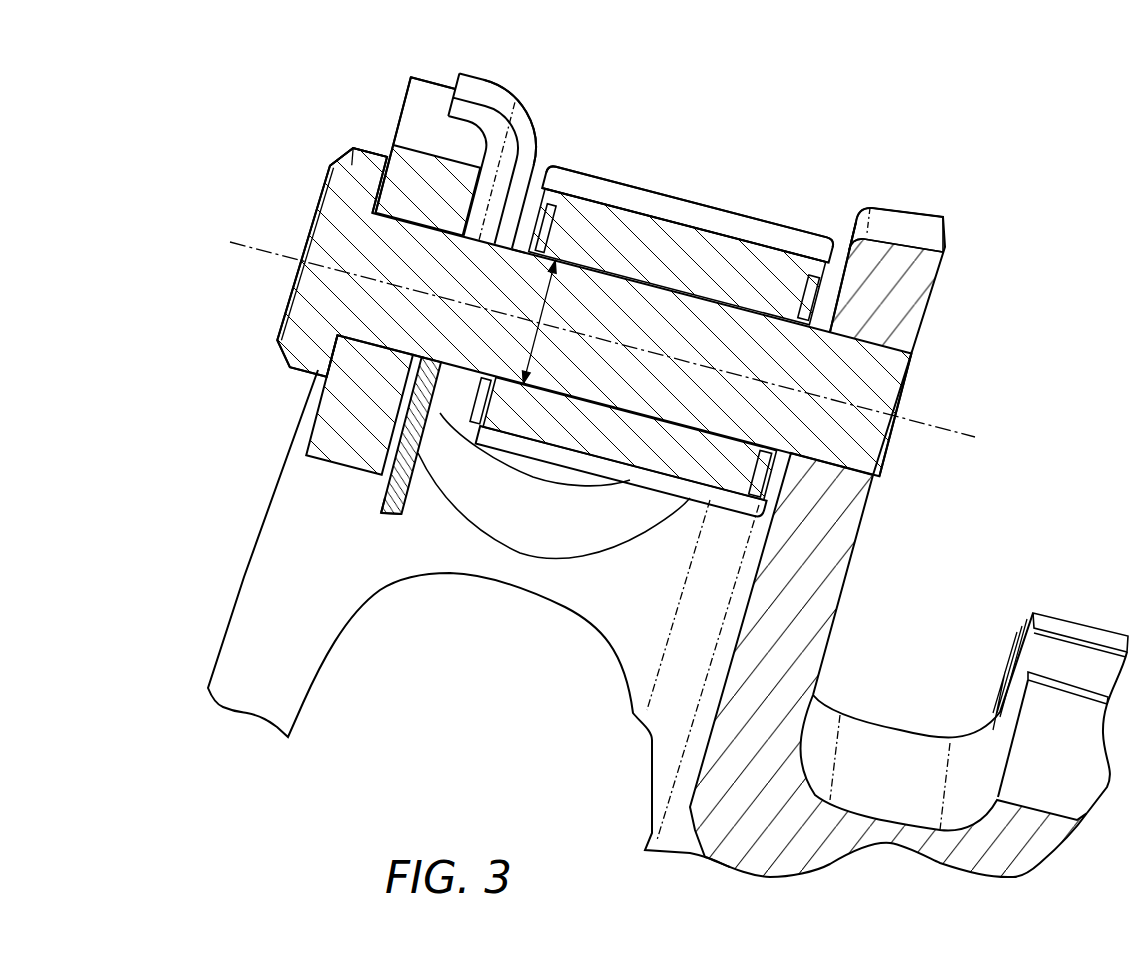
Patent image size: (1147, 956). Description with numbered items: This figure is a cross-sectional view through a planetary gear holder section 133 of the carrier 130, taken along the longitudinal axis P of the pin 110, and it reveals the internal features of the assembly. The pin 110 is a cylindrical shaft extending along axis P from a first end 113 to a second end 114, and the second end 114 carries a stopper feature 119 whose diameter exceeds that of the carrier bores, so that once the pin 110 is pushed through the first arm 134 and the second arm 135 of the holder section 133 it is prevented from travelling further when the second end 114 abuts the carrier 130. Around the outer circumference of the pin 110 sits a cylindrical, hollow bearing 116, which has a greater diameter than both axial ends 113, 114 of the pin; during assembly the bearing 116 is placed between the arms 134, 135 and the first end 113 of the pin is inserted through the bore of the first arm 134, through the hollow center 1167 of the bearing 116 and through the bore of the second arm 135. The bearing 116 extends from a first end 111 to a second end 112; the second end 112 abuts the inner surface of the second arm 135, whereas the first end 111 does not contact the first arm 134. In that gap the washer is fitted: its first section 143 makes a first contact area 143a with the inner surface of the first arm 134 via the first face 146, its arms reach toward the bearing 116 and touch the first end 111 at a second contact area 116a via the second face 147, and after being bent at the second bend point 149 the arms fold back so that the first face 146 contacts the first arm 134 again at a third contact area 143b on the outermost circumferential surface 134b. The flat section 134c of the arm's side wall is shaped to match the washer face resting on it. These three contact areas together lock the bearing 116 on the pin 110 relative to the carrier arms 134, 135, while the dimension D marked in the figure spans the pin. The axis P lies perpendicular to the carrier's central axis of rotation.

The pin 110 is at (818, 376).
The first end of the bearing 111 is at (557, 182).
The second end of the bearing 112 is at (841, 237).
The first end of the pin 113 is at (905, 430).
The second end of the pin 114 is at (322, 232).
The bearing 116 is at (706, 208).
The second contact area 116a is at (548, 170).
The stopper feature 119 is at (333, 163).
The carrier 130 is at (932, 268).
The planetary gear holder section 133 is at (857, 115).
The first arm 134 is at (412, 125).
The outermost circumferential surface of the first arm 134b is at (425, 92).
The outer circumferential surface section of the carrier arm 134c is at (405, 105).
The second arm 135 is at (912, 213).
The first section of the washer 143 is at (418, 450).
The first contact area 143a is at (375, 406).
The third contact area 143b is at (494, 82).
The first face of the washer 146 is at (385, 496).
The second face of the washer 147 is at (417, 505).
The second bend point 149 is at (527, 107).
The hollow center of the bearing 1167 is at (506, 252).
The diameter D is at (543, 322).
The longitudinal axis of the pin P is at (614, 346).